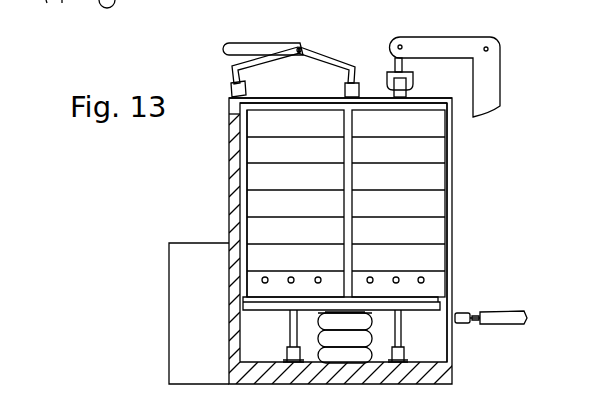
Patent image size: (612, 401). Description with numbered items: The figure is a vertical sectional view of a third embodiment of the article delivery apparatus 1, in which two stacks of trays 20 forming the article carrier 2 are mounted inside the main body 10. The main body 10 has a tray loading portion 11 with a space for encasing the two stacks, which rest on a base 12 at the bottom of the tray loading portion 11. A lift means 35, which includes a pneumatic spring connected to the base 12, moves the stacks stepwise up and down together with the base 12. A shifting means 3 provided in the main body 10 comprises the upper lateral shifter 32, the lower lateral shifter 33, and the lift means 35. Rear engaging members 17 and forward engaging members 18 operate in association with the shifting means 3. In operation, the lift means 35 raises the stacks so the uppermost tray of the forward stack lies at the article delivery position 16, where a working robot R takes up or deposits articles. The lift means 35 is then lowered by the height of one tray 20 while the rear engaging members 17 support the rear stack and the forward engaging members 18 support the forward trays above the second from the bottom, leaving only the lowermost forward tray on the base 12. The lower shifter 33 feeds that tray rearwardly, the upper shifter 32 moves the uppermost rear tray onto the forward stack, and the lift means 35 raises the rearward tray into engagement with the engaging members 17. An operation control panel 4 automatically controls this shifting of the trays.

The article delivery apparatus 1 is at (453, 194).
The article carrier 2 is at (242, 183).
The shifting means 3 is at (535, 340).
The operation control panel 4 is at (172, 281).
The main body 10 is at (452, 218).
The tray loading portion 11 is at (245, 156).
The base 12 is at (441, 307).
The article delivery position 16 is at (436, 104).
The rear engaging members 17 is at (263, 273).
The forward engaging members 18 is at (428, 281).
The tray 20 is at (304, 122).
The upper lateral shifter 32 is at (265, 46).
The lower lateral shifter 33 is at (520, 323).
The lift means 35 is at (375, 335).
The working robot R is at (442, 45).